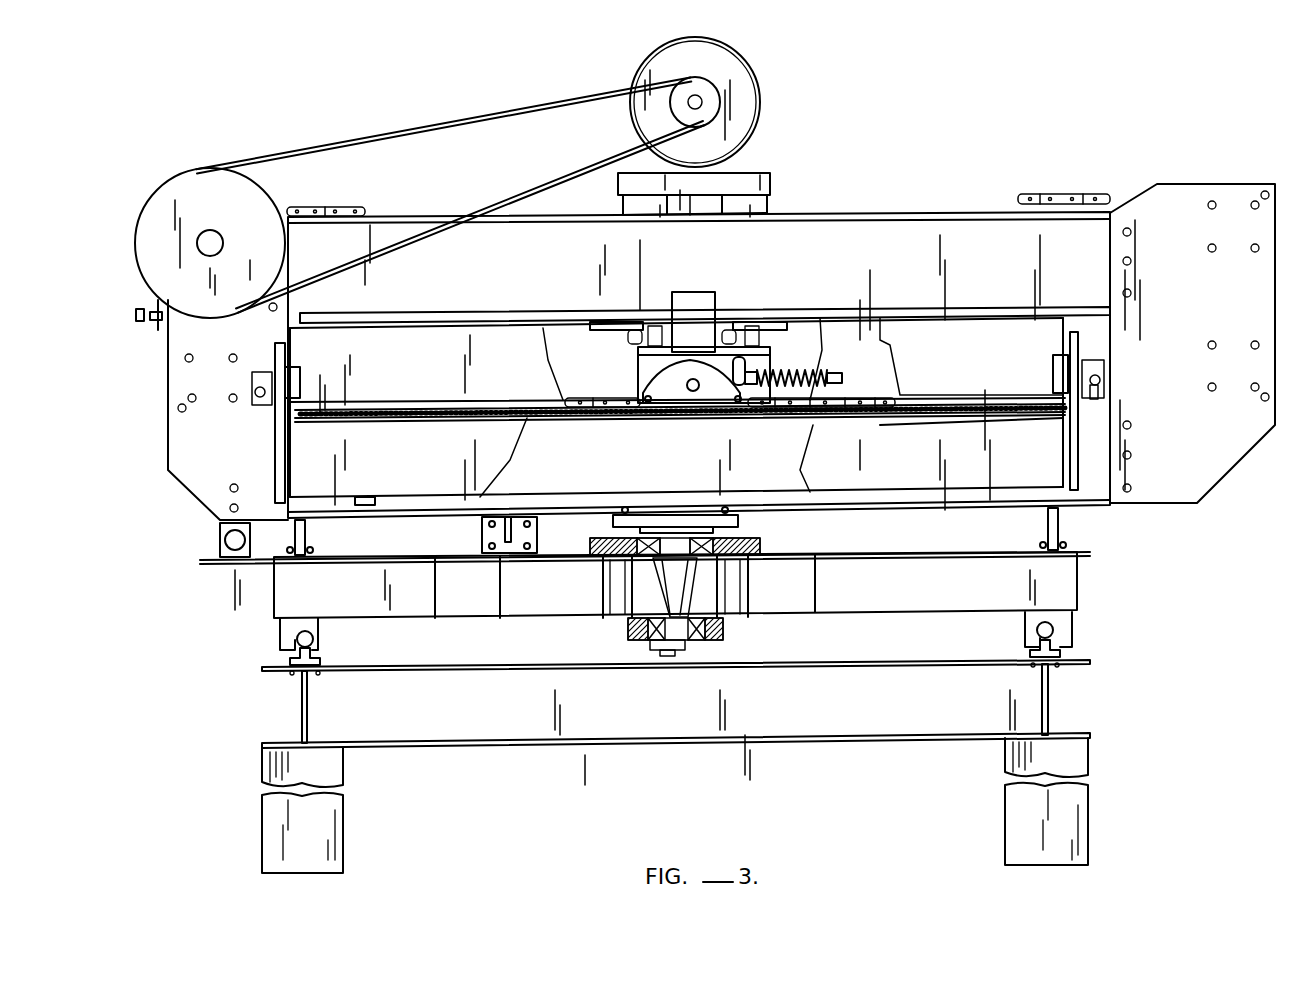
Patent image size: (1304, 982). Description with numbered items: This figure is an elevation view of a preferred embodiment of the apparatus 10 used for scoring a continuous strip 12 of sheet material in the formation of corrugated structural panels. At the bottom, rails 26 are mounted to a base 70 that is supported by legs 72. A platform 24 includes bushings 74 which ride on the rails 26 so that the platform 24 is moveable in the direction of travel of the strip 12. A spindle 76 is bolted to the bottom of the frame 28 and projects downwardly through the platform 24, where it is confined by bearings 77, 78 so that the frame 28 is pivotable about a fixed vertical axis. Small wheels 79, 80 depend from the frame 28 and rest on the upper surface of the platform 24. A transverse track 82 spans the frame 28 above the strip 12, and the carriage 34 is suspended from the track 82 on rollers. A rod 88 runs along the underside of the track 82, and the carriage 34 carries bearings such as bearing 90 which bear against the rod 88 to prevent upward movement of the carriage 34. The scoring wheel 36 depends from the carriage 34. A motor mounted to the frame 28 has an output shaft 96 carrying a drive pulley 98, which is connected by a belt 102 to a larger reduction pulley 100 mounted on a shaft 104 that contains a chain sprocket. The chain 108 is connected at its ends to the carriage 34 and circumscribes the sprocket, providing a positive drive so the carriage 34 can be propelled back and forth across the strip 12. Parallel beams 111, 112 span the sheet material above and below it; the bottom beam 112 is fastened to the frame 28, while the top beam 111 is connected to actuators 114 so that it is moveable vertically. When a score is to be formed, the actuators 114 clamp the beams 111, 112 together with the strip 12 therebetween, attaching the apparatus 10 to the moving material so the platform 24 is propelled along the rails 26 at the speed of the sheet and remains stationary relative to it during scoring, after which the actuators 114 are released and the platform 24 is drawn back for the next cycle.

The apparatus 10 is at (1017, 147).
The strip of sheet material 12 is at (962, 398).
The platform 24 is at (1055, 580).
The rails 26 is at (305, 641).
The frame 28 is at (1213, 462).
The carriage 34 is at (770, 350).
The scoring wheel 36 is at (690, 412).
The base 70 is at (712, 745).
The legs 72 is at (345, 828).
The bushings 74 is at (290, 636).
The spindle 76 is at (680, 590).
The bearing 77 is at (738, 538).
The bearing 78 is at (725, 632).
The small wheel 79 is at (1060, 540).
The small wheel 80 is at (294, 548).
The transverse track 82 is at (810, 312).
The rod 88 is at (620, 322).
The bearing 90 is at (746, 322).
The output shaft 96 is at (700, 97).
The drive pulley 98 is at (672, 108).
The reduction pulley 100 is at (265, 210).
The belt 102 is at (447, 128).
The shaft 104 is at (215, 240).
The chain 108 is at (345, 203).
The top beam 111 is at (1000, 330).
The bottom beam 112 is at (825, 466).
The actuators 114 is at (258, 388).